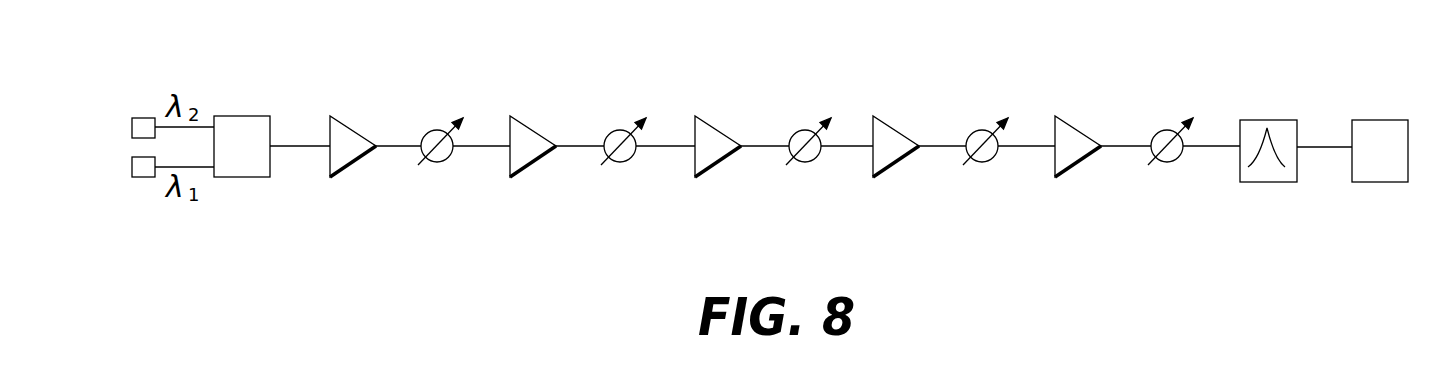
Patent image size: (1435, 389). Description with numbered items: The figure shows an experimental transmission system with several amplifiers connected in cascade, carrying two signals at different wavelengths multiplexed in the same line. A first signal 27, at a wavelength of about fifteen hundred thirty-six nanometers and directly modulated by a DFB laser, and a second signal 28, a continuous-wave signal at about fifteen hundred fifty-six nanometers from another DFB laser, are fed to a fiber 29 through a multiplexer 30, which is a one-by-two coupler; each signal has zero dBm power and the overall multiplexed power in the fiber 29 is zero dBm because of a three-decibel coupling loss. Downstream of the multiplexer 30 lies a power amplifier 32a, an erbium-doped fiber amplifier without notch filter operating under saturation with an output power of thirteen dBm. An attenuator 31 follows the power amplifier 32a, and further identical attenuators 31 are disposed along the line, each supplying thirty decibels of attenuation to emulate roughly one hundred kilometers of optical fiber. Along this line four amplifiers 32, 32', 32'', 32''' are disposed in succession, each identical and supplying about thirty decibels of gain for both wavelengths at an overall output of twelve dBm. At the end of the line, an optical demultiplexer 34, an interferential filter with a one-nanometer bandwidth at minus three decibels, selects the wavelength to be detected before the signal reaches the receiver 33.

The first signal 27 is at (128, 163).
The second signal 28 is at (132, 125).
The fiber 29 is at (292, 143).
The multiplexer 30 is at (243, 177).
The attenuator 31 is at (423, 130).
The power amplifier 32a is at (353, 163).
The amplifier 32 is at (522, 179).
The amplifier 32' is at (702, 181).
The amplifier 32'' is at (879, 178).
The amplifier 32''' is at (1057, 179).
The receiver 33 is at (1358, 120).
The optical demultiplexer 34 is at (1267, 183).